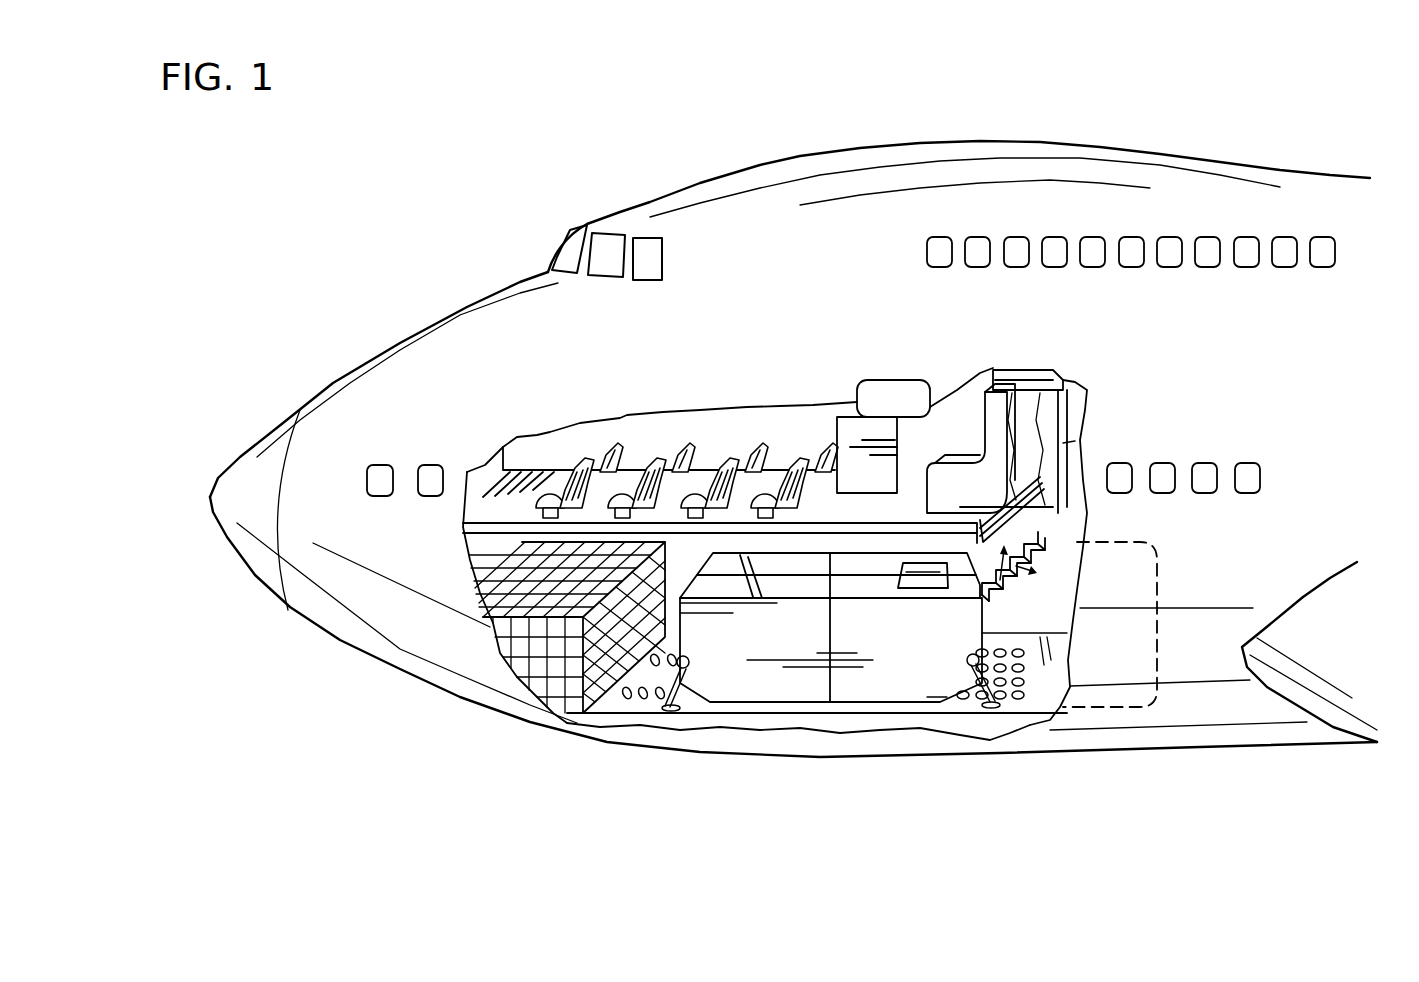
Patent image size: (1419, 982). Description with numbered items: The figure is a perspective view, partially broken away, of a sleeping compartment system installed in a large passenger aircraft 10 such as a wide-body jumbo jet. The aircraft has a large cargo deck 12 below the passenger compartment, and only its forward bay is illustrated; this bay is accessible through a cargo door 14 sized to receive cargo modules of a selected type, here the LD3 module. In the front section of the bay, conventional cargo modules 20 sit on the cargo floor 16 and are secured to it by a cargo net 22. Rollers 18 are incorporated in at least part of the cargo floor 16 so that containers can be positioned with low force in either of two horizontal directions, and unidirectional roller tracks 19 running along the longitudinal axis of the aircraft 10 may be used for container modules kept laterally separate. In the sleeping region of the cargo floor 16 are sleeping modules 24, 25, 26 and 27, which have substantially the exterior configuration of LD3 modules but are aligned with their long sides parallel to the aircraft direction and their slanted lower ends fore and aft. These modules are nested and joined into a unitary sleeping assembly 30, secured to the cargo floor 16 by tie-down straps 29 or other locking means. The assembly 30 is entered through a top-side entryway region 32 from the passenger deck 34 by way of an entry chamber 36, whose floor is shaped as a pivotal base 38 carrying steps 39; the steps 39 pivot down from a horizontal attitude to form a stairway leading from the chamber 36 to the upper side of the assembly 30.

The passenger aircraft 10 is at (386, 332).
The cargo deck 12 is at (687, 557).
The cargo door 14 is at (1118, 707).
The cargo floor 16 is at (959, 715).
The rollers 18 is at (1018, 699).
The unidirectional roller tracks 19 is at (606, 733).
The cargo modules 20 is at (546, 670).
The cargo net 22 is at (567, 715).
The sleeping module 24 is at (745, 687).
The sleeping module 25 is at (913, 687).
The sleeping module 26 is at (803, 567).
The sleeping module 27 is at (857, 567).
The tie-down straps 29 is at (638, 702).
The sleeping assembly 30 is at (831, 597).
The top-side entryway region 32 is at (925, 577).
The passenger deck 34 is at (813, 497).
The entry chamber 36 is at (1032, 378).
The pivotal base 38 is at (1013, 575).
The steps 39 is at (1003, 575).